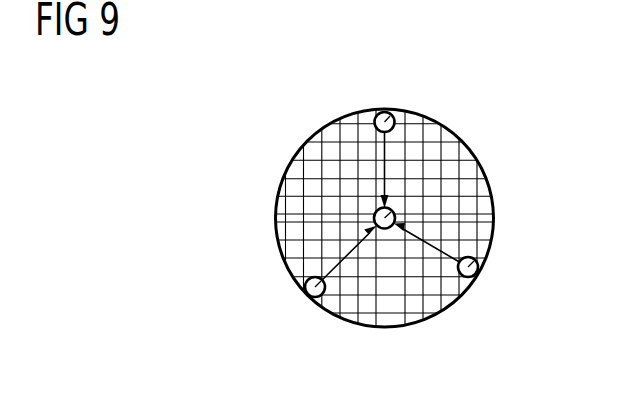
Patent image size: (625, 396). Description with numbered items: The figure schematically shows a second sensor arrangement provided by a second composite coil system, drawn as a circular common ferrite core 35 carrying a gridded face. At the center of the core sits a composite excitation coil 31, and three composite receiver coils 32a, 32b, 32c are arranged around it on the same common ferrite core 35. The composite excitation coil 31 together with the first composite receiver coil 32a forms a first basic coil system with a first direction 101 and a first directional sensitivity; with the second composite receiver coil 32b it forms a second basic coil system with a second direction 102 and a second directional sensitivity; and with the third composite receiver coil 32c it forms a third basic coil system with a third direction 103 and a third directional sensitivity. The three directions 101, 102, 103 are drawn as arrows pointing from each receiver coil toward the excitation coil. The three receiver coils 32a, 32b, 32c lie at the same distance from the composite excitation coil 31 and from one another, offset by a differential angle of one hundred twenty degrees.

The common ferrite core 35 is at (308, 167).
The composite excitation coil 31 is at (395, 217).
The first composite receiver coil 32a is at (384, 111).
The second composite receiver coil 32b is at (477, 271).
The third composite receiver coil 32c is at (308, 296).
The first direction 101 is at (386, 148).
The second direction 102 is at (445, 256).
The third direction 103 is at (342, 263).